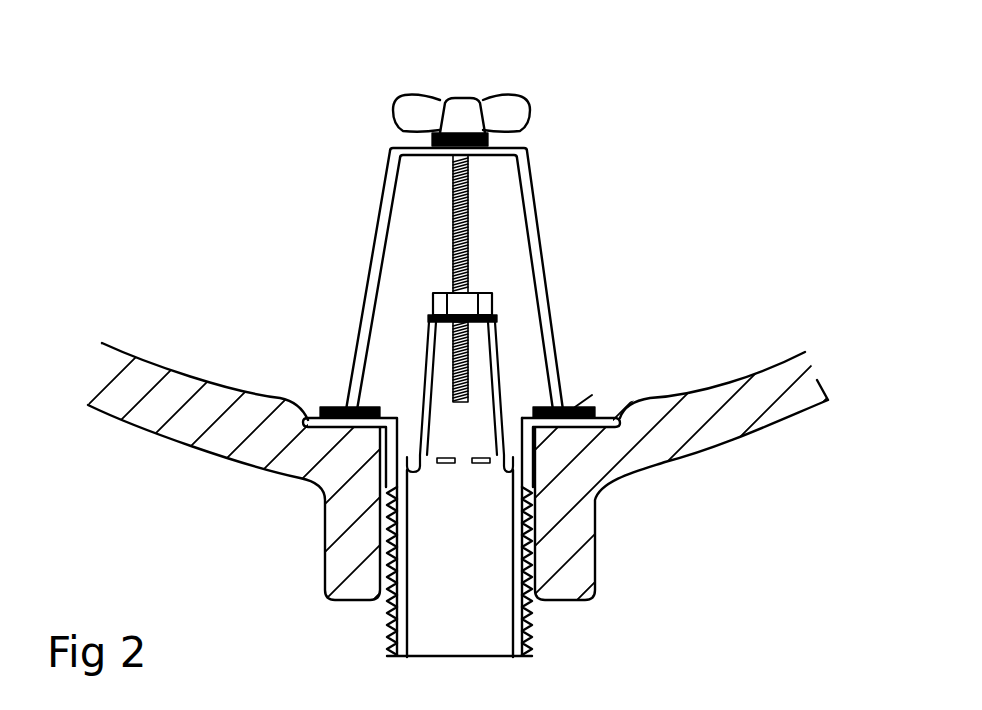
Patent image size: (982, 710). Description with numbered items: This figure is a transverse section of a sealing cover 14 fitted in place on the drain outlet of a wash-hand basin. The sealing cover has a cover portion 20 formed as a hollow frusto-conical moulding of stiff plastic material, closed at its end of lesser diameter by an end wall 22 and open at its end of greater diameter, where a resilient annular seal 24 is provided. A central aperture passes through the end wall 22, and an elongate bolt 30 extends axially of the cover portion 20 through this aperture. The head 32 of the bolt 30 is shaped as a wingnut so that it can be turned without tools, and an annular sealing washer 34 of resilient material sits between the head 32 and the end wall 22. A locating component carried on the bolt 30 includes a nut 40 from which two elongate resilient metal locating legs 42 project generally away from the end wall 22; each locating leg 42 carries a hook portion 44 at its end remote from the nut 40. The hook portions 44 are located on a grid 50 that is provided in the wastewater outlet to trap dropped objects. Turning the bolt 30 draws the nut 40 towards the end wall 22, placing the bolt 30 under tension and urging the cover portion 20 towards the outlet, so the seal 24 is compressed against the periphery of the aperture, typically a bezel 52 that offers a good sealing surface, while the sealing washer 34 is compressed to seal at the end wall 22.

The drain assembly 14 is at (578, 208).
The cover portion 20 is at (553, 318).
The end wall 22 is at (413, 144).
The resilient annular seal 24 is at (330, 407).
The elongate bolt 30 is at (455, 208).
The head of the bolt 32 is at (475, 97).
The annular sealing washer 34 is at (490, 142).
The nut 40 is at (492, 300).
The locating legs 42 is at (500, 370).
The hook portion 44 is at (407, 467).
The grid 50 is at (482, 466).
The bezel 52 is at (312, 481).